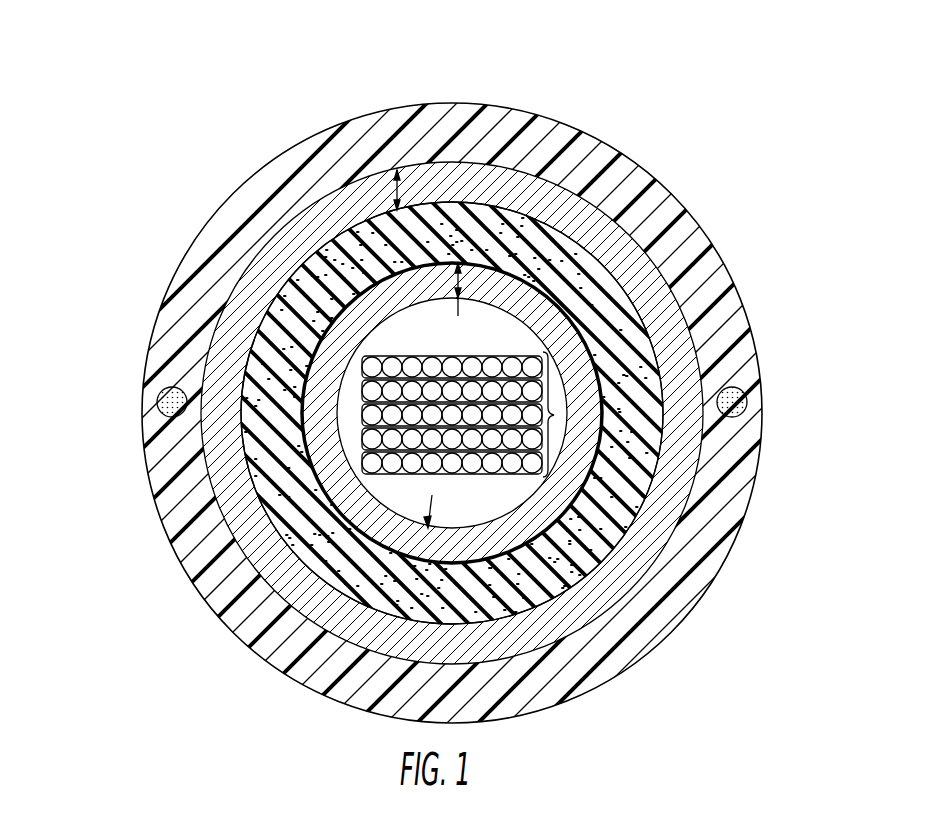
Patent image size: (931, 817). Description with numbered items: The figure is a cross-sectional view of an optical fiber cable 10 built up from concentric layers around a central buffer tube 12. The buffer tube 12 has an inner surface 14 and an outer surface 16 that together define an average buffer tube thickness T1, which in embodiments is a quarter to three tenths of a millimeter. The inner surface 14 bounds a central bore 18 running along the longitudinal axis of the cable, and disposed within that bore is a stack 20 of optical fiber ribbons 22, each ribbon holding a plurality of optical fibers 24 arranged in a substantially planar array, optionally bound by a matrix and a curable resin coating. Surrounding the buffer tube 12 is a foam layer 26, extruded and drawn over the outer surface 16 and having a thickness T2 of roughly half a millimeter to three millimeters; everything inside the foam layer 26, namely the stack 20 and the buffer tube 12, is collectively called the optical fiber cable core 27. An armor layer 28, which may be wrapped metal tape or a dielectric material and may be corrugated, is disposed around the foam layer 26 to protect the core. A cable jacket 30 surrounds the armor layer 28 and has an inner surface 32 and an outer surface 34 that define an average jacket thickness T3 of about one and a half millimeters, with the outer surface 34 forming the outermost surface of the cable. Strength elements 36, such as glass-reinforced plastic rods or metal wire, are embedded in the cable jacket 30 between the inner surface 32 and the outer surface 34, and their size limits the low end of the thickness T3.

The optical fiber cable 10 is at (465, 408).
The buffer tube 12 is at (494, 333).
The inner surface 14 is at (383, 335).
The outer surface 16 is at (333, 533).
The central bore 18 is at (527, 240).
The stack 20 is at (442, 432).
The optical fiber ribbons 22 is at (316, 434).
The optical fibers 24 is at (461, 415).
The foam layer 26 is at (665, 348).
The optical fiber cable core 27 is at (605, 548).
The armor layer 28 is at (237, 520).
The cable jacket 30 is at (710, 560).
The inner surface 32 is at (250, 282).
The outer surface 34 is at (722, 272).
The strength elements 36 is at (165, 405).
The buffer tube thickness T1 is at (383, 613).
The foam layer thickness T2 is at (462, 150).
The jacket thickness T3 is at (379, 106).